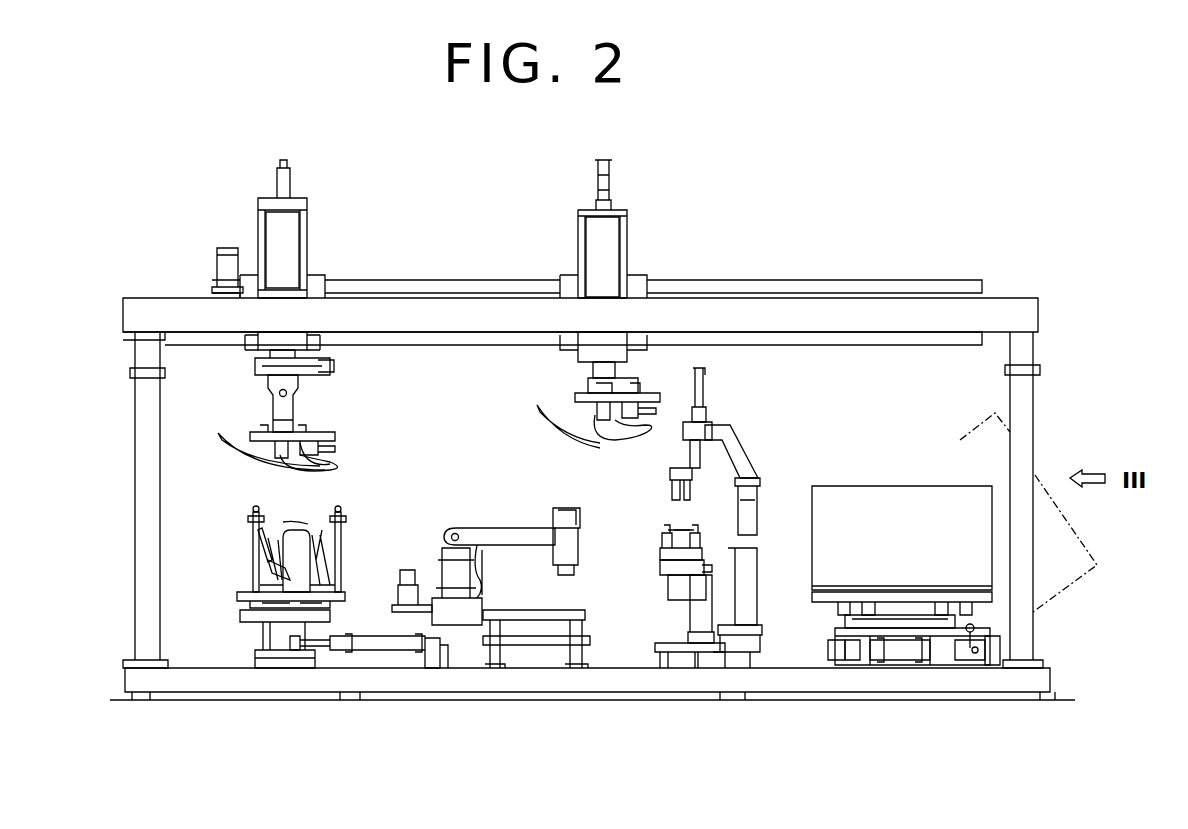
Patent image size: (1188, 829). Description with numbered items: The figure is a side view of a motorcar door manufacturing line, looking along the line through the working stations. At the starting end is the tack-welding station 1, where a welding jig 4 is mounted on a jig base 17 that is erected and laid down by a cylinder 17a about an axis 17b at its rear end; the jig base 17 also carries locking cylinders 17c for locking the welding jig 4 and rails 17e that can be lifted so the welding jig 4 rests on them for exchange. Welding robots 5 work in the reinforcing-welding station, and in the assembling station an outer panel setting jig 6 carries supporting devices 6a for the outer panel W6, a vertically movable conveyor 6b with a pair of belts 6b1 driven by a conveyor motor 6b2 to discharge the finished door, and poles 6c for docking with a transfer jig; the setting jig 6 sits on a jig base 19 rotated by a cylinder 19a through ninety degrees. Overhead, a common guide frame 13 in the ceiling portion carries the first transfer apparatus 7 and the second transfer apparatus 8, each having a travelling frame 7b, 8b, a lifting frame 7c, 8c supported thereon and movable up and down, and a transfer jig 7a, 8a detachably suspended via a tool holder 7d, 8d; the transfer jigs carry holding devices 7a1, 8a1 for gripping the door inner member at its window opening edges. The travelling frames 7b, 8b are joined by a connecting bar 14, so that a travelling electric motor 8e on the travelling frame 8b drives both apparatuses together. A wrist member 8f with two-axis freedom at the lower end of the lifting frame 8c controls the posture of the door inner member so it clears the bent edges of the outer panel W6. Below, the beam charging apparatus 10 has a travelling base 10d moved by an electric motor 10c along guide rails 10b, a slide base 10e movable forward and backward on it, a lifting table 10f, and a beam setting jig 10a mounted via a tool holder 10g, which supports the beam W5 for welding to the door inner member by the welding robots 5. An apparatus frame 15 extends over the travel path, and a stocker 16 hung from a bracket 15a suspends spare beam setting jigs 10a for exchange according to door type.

The tack-welding station 1 is at (880, 416).
The welding jig 4 is at (985, 585).
The welding robot 5 is at (507, 526).
The outer panel setting jig 6 is at (237, 596).
The supporting device 6a is at (258, 528).
The conveyor 6b is at (313, 560).
The belt 6b1 is at (268, 550).
The conveyor motor 6b2 is at (265, 575).
The pole 6c is at (256, 511).
The first transfer apparatus 7 is at (628, 224).
The transfer jig 7a is at (582, 397).
The holding device 7a1 is at (592, 436).
The travelling frame 7b is at (607, 253).
The lifting frame 7c is at (598, 368).
The tool holder 7d is at (630, 380).
The second transfer apparatus 8 is at (310, 216).
The transfer jig 8a is at (320, 433).
The holding device 8a1 is at (330, 463).
The travelling frame 8b is at (290, 243).
The lifting frame 8c is at (305, 356).
The tool holder 8d is at (280, 423).
The travelling electric motor 8e is at (228, 268).
The wrist member 8f is at (302, 396).
The beam charging apparatus 10 is at (660, 580).
The beam setting jig 10a is at (663, 540).
The guide rail 10b is at (692, 655).
The electric motor 10c is at (690, 605).
The travelling base 10d is at (742, 642).
The slide base 10e is at (748, 572).
The lifting table 10f is at (668, 585).
The tool holder 10g is at (665, 568).
The common guide frame 13 is at (822, 313).
The connecting bar 14 is at (441, 291).
The apparatus frame 15 is at (752, 492).
The bracket 15a is at (717, 428).
The stocker 16 is at (690, 478).
The jig base 17 is at (885, 620).
The cylinder 17a is at (910, 650).
The axis 17b is at (970, 650).
The locking cylinder 17c is at (975, 620).
The rail 17e is at (930, 605).
The jig base 19 is at (245, 618).
The cylinder 19a is at (380, 652).
The beam W5 is at (680, 530).
The outer panel W6 is at (282, 520).